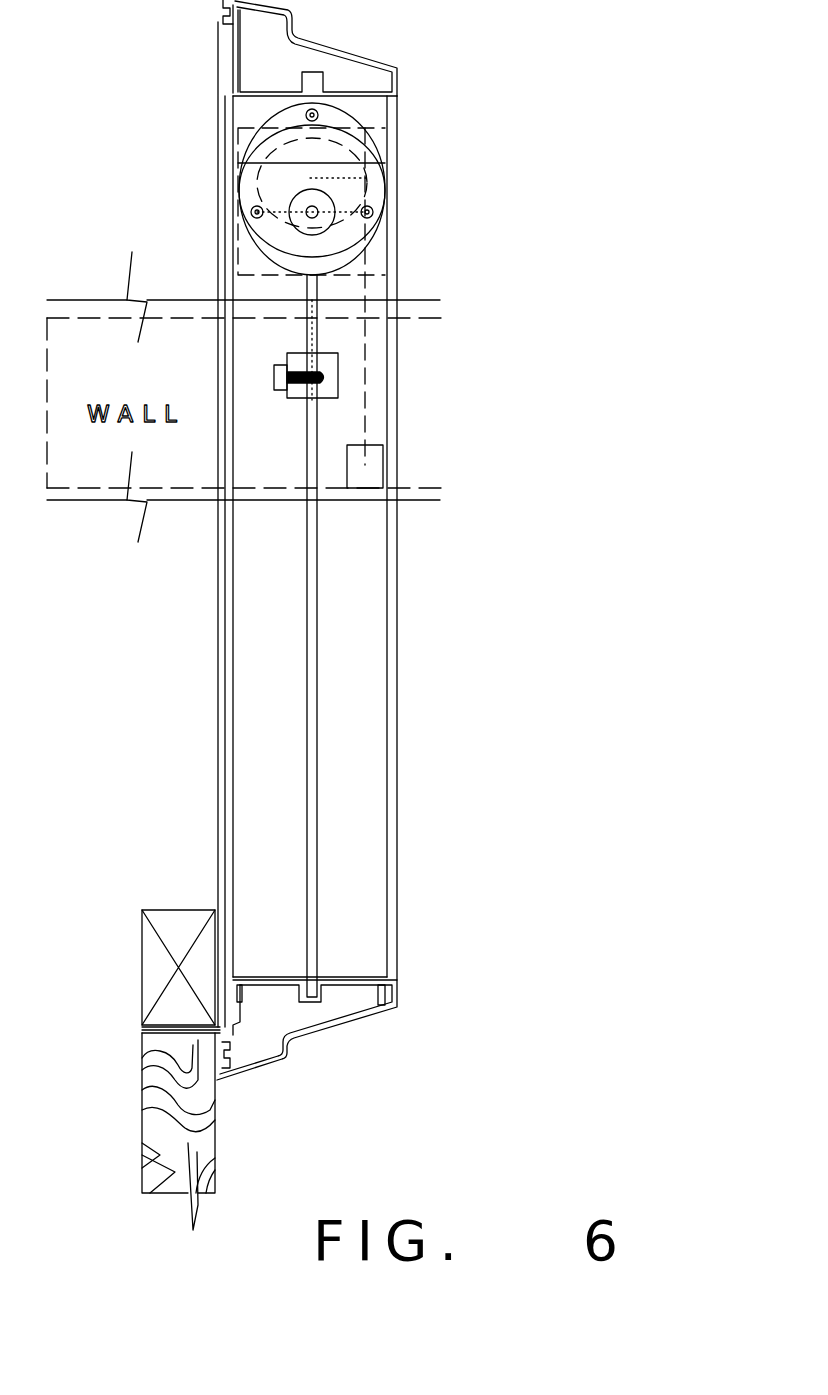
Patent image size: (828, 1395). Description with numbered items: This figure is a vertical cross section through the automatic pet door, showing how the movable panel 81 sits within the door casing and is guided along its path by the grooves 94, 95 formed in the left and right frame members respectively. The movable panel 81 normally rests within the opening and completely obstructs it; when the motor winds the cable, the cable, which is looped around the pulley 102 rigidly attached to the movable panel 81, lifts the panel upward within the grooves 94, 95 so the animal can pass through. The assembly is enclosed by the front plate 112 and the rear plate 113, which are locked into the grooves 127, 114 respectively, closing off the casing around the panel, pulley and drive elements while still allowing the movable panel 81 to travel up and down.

The movable panel 81 is at (317, 545).
The groove 94 is at (318, 328).
The groove 95 is at (315, 977).
The pulley 102 is at (283, 392).
The front plate 112 is at (367, 397).
The rear plate 113 is at (233, 96).
The groove 114 is at (238, 218).
The groove 127 is at (397, 92).